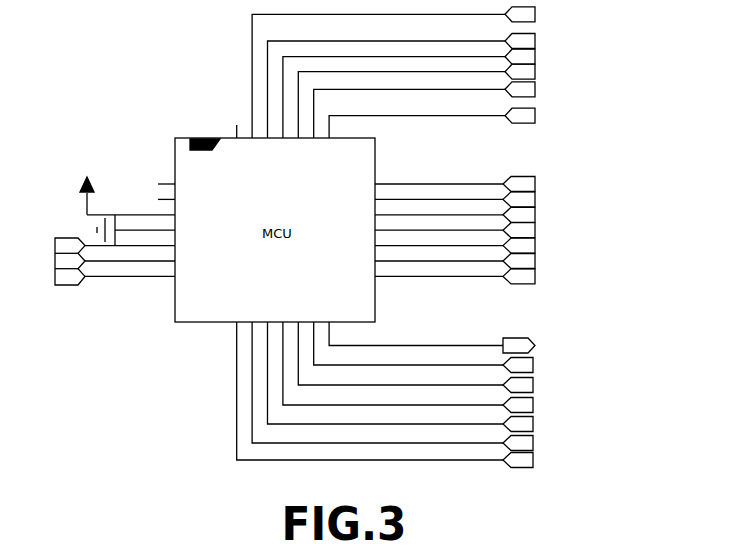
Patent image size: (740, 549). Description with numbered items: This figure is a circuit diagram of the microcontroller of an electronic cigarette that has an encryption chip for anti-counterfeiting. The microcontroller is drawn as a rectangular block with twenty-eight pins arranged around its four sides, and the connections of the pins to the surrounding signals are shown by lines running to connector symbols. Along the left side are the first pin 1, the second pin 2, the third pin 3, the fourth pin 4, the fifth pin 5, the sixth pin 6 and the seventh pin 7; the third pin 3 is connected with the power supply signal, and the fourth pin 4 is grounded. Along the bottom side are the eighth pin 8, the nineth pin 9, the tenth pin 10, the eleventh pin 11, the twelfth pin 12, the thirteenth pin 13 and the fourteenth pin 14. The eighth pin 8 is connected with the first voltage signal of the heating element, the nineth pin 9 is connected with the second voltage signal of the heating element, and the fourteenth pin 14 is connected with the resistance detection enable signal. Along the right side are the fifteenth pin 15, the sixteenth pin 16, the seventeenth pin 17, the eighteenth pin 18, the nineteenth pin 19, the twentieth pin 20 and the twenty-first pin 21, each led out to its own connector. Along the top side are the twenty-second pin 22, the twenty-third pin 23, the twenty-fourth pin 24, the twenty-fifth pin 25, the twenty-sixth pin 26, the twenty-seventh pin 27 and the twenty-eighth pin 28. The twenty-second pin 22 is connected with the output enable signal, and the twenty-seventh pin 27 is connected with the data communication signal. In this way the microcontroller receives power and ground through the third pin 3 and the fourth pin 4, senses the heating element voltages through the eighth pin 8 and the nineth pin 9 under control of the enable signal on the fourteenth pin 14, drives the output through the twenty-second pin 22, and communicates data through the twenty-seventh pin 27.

The first pin 1 is at (166, 178).
The second pin 2 is at (166, 194).
The third pin 3 is at (125, 189).
The fourth pin 4 is at (136, 230).
The fifth pin 5 is at (130, 240).
The sixth pin 6 is at (130, 256).
The seventh pin 7 is at (130, 271).
The eighth pin 8 is at (408, 395).
The nineth pin 9 is at (414, 386).
The tenth pin 10 is at (401, 377).
The eleventh pin 11 is at (408, 367).
The twelfth pin 12 is at (415, 357).
The thirteenth pin 13 is at (423, 347).
The fourteenth pin 14 is at (464, 337).
The fifteenth pin 15 is at (455, 274).
The sixteenth pin 16 is at (455, 259).
The seventeenth pin 17 is at (455, 243).
The eighteenth pin 18 is at (455, 228).
The nineteenth pin 19 is at (455, 212).
The twentieth pin 20 is at (455, 197).
The twenty-first pin 21 is at (455, 182).
The twenty-second pin 22 is at (461, 123).
The twenty-third pin 23 is at (424, 110).
The twenty-fourth pin 24 is at (416, 101).
The twenty-fifth pin 25 is at (409, 94).
The twenty-sixth pin 26 is at (402, 87).
The twenty-seventh pin 27 is at (410, 73).
The twenty-eighth pin 28 is at (244, 132).